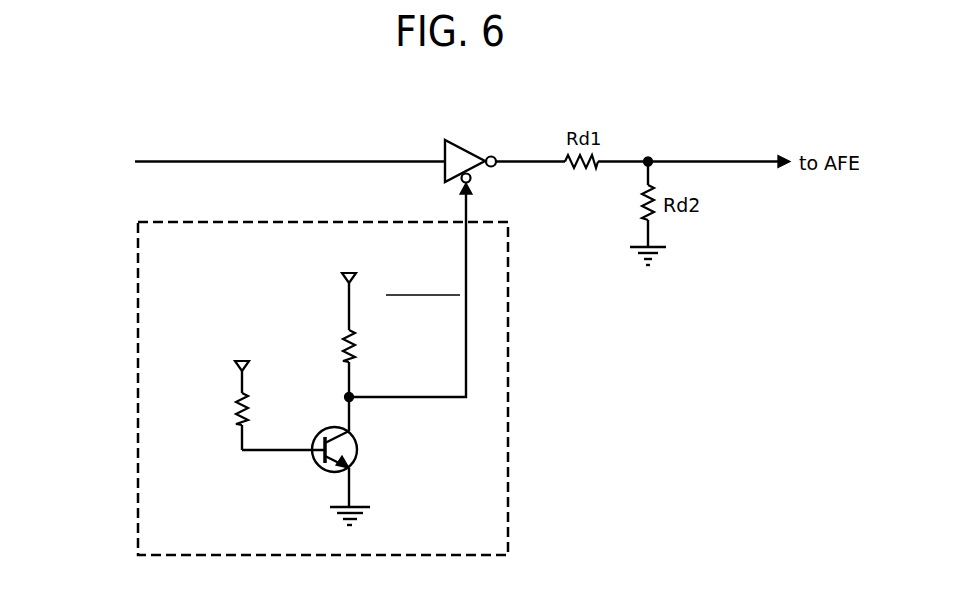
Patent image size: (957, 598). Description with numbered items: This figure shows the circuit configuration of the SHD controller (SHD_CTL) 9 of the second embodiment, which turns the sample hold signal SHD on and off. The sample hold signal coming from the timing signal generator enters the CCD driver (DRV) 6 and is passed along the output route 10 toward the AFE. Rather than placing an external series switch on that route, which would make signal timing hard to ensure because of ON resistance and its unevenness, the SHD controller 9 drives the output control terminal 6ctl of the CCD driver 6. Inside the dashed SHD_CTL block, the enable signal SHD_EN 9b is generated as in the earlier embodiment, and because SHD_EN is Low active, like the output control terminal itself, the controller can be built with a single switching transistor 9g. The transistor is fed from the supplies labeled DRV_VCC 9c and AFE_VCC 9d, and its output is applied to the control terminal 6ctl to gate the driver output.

The output route 10 is at (270, 161).
The CCD driver 6 is at (441, 183).
The output control terminal 6ctl is at (471, 181).
The SHD controller 9 is at (510, 370).
The SHD_EN 9b is at (409, 292).
The DRV_VCC power supply (5V) 9c is at (348, 320).
The AFE_VCC power supply (3.3V) 9d is at (245, 390).
The switching transistor 9g is at (315, 467).